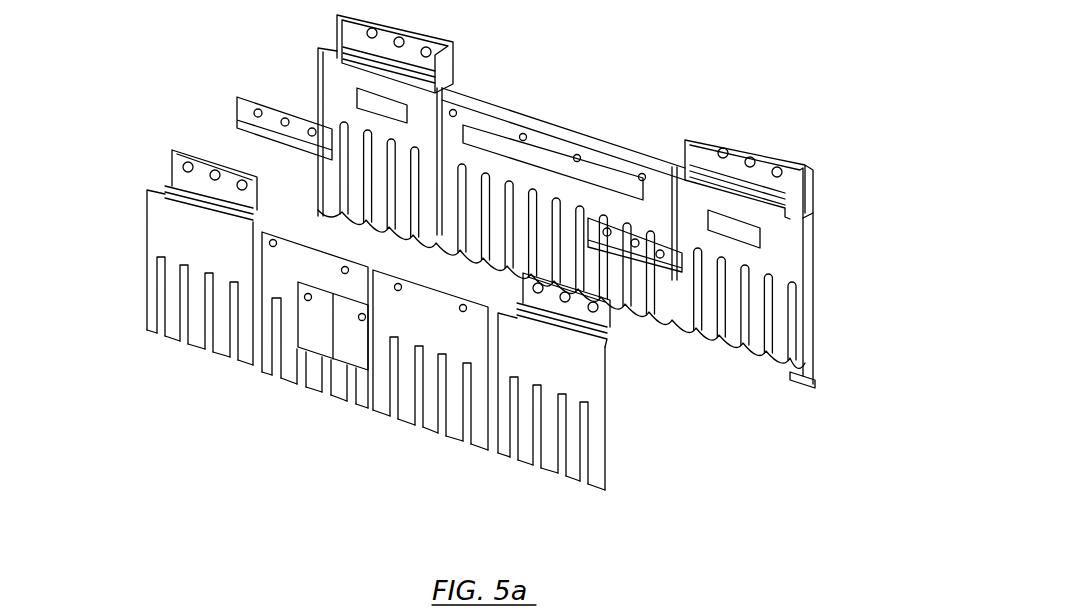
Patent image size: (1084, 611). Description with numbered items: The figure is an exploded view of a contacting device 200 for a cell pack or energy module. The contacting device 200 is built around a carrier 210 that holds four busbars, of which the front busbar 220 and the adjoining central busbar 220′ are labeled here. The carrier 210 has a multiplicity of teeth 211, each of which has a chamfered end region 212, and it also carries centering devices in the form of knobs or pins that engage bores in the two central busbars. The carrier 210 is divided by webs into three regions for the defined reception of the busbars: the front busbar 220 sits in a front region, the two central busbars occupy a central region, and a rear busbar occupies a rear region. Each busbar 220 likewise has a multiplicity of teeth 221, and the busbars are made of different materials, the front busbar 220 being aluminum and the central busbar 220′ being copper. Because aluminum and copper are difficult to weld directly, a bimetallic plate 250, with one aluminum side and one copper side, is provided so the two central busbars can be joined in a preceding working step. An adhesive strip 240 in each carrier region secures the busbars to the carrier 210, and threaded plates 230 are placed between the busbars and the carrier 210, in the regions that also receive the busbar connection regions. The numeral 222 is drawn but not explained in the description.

The contacting device 200 is at (767, 495).
The carrier 210 is at (617, 120).
The teeth 211 is at (777, 325).
The chamfered end regions 212 is at (777, 370).
The front busbar 220 is at (538, 357).
The central busbar 220′ is at (420, 325).
The teeth 221 is at (593, 473).
The mounting bracket with holes 222 is at (205, 176).
The threaded plate 230 is at (235, 113).
The adhesive strip 240 is at (743, 232).
The bimetallic plate 250 is at (338, 342).